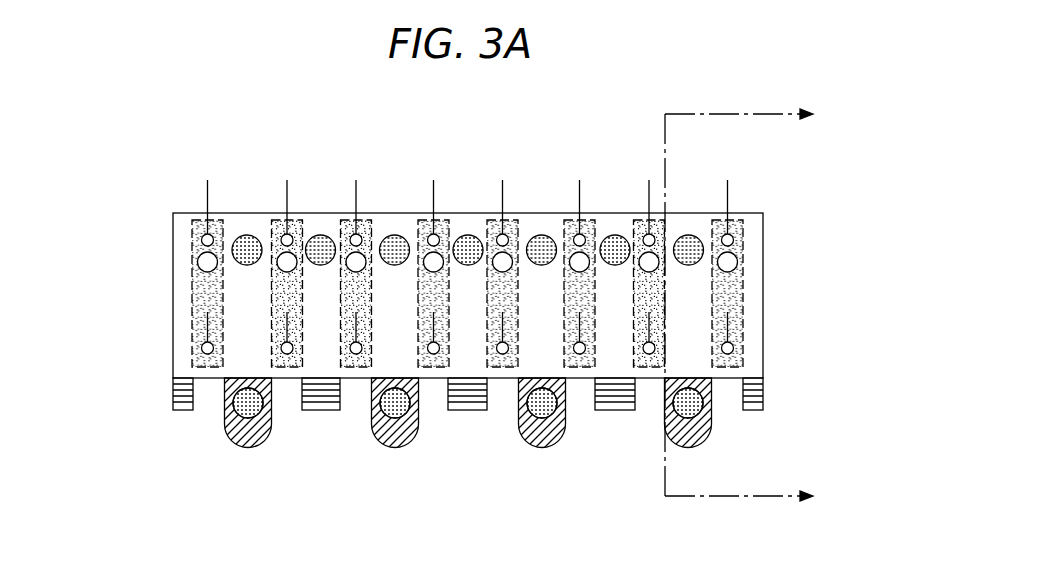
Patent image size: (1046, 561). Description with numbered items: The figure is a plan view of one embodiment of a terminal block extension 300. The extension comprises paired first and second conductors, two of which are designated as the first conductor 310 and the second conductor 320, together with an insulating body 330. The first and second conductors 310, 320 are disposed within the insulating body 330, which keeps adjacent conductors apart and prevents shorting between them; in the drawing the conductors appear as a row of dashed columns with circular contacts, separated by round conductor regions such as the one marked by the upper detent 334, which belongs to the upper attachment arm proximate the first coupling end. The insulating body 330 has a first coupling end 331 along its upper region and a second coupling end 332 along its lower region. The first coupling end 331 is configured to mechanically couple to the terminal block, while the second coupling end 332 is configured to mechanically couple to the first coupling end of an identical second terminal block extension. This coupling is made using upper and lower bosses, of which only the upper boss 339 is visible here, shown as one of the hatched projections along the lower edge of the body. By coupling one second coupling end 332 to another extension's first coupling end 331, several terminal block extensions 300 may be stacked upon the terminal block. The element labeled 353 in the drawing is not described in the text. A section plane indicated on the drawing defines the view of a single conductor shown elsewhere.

The terminal block extension 300 is at (798, 300).
The first conductor 310 is at (735, 228).
The second conductor 320 is at (645, 235).
The insulating body 330 is at (174, 303).
The first coupling end 331 is at (141, 213).
The second coupling end 332 is at (141, 373).
The upper detent 334 is at (248, 236).
The upper boss 339 is at (398, 413).
The electrode pad 353 is at (571, 254).